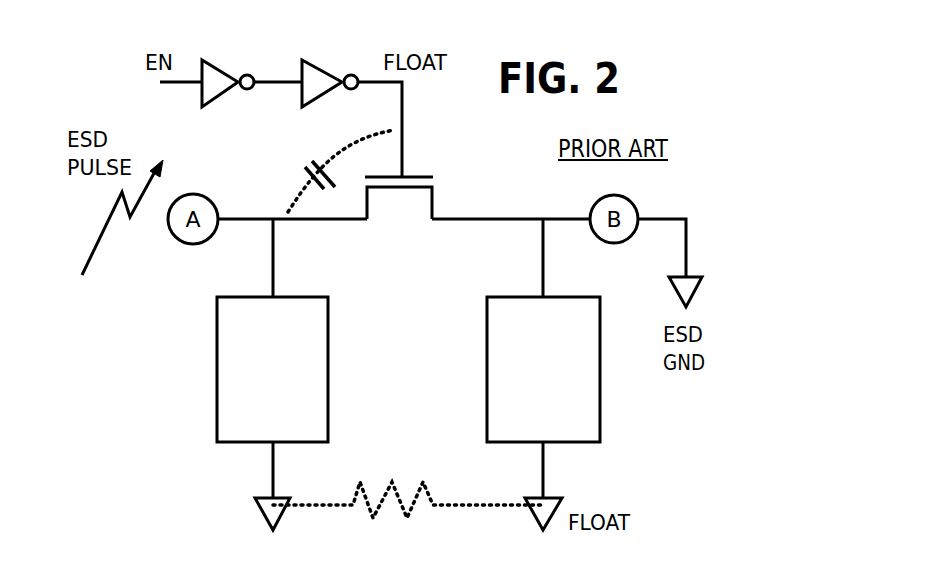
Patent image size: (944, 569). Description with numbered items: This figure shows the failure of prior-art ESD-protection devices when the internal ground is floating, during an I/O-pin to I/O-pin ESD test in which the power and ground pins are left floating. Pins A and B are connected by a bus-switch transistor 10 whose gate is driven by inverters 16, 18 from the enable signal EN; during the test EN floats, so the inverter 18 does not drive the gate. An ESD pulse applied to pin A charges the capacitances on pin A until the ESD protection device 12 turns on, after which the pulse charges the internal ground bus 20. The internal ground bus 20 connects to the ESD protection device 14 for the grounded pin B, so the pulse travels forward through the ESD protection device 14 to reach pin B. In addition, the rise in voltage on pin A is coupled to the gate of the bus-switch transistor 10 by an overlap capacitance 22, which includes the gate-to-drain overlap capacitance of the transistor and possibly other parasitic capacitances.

The bus-switch transistor 10 is at (398, 194).
The ESD protection device 12 is at (310, 343).
The ESD protection device 14 is at (583, 344).
The inverter 16 is at (218, 66).
The inverter 18 is at (318, 66).
The internal ground bus 20 is at (415, 480).
The overlap capacitance 22 is at (306, 162).